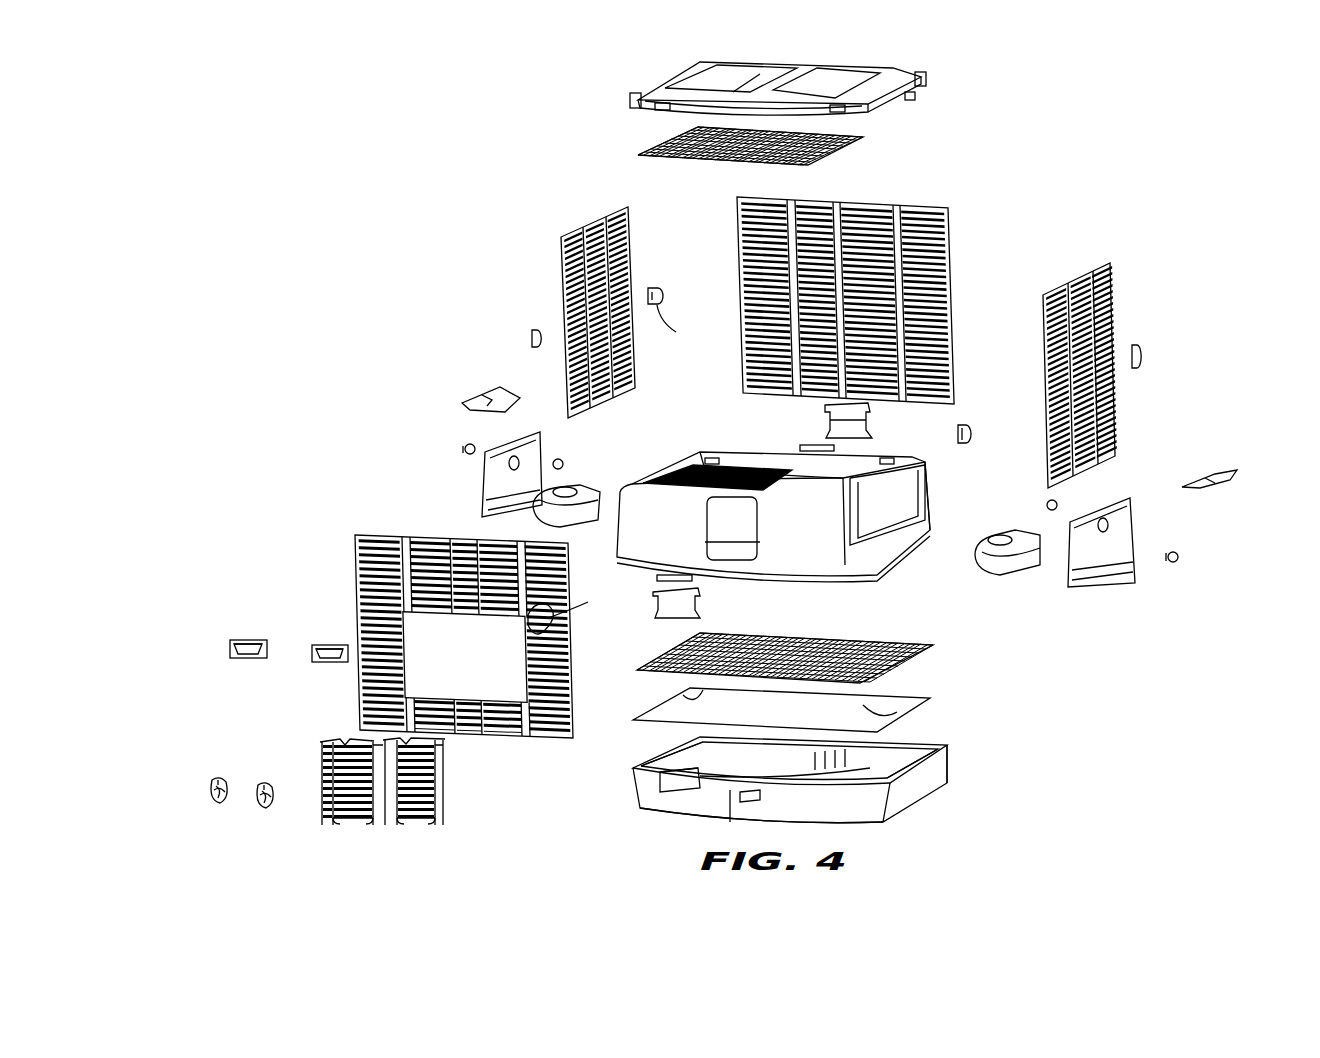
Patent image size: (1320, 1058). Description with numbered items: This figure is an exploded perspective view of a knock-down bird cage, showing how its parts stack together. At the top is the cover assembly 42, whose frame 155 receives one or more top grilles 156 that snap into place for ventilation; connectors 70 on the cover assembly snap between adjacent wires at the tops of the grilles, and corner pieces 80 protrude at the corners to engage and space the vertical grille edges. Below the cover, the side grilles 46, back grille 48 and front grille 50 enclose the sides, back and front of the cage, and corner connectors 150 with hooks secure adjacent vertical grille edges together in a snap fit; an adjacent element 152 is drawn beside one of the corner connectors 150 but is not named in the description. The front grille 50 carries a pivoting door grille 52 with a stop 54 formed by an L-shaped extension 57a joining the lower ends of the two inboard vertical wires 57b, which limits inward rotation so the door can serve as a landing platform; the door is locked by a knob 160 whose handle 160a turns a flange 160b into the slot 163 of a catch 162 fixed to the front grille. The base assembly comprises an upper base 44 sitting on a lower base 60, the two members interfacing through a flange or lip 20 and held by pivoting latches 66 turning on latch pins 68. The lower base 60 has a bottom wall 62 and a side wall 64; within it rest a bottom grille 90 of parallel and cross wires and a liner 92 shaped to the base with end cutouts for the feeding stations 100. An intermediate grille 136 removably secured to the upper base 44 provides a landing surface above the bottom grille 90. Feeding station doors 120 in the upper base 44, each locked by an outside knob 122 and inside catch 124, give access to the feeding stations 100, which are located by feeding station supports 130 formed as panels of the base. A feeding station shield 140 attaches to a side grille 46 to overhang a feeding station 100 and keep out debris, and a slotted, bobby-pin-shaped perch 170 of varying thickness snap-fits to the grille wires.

The flange or lip 20 is at (930, 530).
The cover assembly 42 is at (867, 61).
The upper base 44 is at (925, 500).
The side grilles 46 is at (590, 222).
The back grille 48 is at (950, 232).
The front grille 50 is at (372, 532).
The door grille 52 is at (463, 806).
The stop 54 is at (415, 820).
The L-shaped extension 57a is at (430, 822).
The inboard vertical wires 57b is at (430, 768).
The lower base 60 is at (963, 784).
The bottom wall 62 is at (700, 760).
The side wall 64 is at (650, 805).
The pivoting latch 66 is at (870, 435).
The latch pin 68 is at (815, 446).
The connectors 70 is at (905, 100).
The corner pieces 80 is at (636, 96).
The bottom grille 90 is at (935, 654).
The liner 92 is at (920, 705).
The feeding station 100 is at (536, 520).
The feeding station door 120 is at (485, 485).
The knob 122 is at (464, 447).
The catch 124 is at (566, 462).
The feeding station support 130 is at (930, 752).
The intermediate grille 136 is at (648, 478).
The feeding station shield or baffle 140 is at (470, 392).
The corner connector 150 is at (657, 290).
The strap 152 is at (660, 305).
The frame 155 is at (689, 60).
The top grille 156 is at (840, 146).
The knob 160 is at (229, 777).
The handle 160a is at (212, 790).
The flange 160b is at (213, 780).
The catch 162 is at (251, 629).
The slot 163 is at (232, 655).
The perch 170 is at (585, 620).